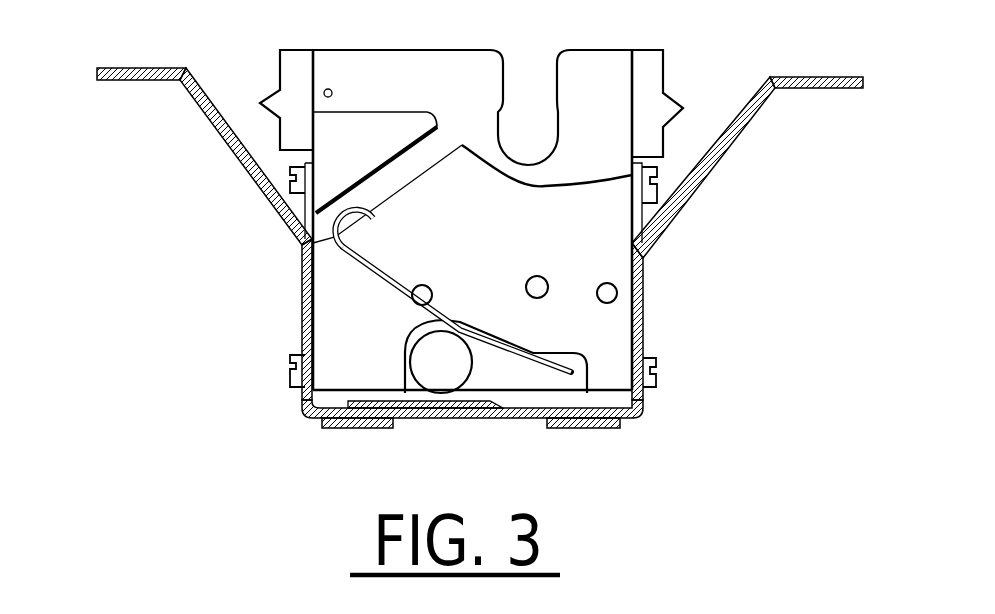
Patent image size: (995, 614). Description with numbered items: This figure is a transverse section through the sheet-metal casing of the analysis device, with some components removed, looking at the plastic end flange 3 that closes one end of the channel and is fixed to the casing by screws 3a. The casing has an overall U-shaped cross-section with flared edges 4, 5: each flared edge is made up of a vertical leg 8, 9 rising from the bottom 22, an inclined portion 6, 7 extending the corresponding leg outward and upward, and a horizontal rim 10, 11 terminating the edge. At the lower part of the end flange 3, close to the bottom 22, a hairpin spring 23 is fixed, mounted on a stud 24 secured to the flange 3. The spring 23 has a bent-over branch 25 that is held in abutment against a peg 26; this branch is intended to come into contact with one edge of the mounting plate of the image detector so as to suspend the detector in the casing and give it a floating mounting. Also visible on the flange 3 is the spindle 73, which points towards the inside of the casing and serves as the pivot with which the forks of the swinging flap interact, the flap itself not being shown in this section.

The end flange 3 is at (413, 63).
The screws 3a is at (293, 192).
The flared edge 4 is at (345, 214).
The flared edge 5 is at (747, 200).
The inclined portion 6 is at (220, 118).
The inclined portion 7 is at (735, 126).
The vertical leg 8 is at (302, 297).
The vertical leg 9 is at (643, 300).
The horizontal rim 10 is at (127, 68).
The horizontal rim 11 is at (810, 77).
The bottom 22 is at (349, 392).
The hairpin spring 23 is at (453, 279).
The stud 24 is at (450, 390).
The bent-over branch 25 is at (363, 250).
The peg 26 is at (434, 296).
The spindle 73 is at (563, 243).